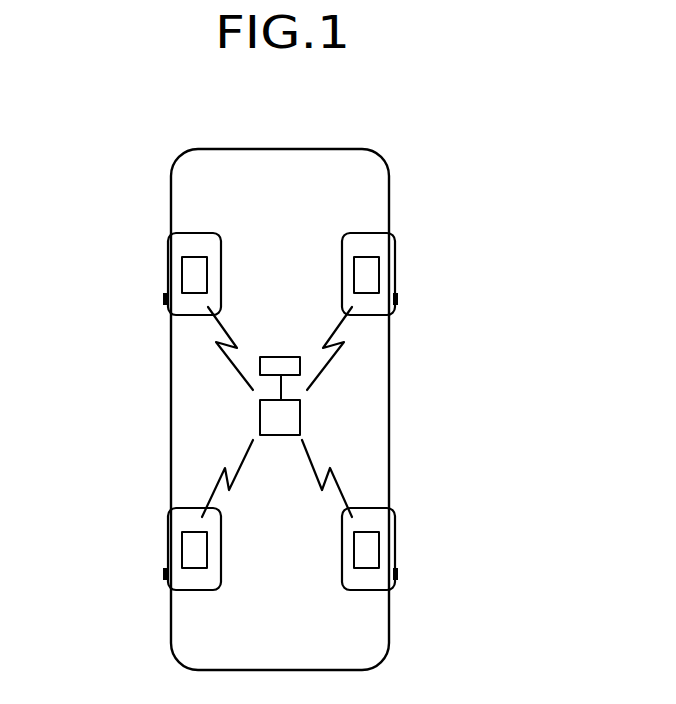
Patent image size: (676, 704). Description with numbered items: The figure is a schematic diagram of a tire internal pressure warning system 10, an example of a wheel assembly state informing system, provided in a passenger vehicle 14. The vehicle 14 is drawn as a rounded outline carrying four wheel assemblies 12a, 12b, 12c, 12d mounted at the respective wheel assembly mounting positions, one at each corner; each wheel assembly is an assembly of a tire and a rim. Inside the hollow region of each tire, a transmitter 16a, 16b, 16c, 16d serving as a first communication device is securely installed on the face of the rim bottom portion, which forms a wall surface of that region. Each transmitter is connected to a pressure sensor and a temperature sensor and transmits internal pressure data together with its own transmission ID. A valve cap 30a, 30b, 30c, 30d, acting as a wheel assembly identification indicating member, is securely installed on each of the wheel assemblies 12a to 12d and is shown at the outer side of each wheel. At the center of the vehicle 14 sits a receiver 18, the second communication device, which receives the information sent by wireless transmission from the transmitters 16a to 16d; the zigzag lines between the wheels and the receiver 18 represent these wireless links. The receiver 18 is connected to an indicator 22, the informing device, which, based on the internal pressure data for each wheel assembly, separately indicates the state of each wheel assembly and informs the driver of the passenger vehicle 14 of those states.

The tire internal pressure warning system 10 is at (490, 100).
The passenger vehicle 14 is at (343, 149).
The wheel assembly 12a is at (193, 232).
The wheel assembly 12b is at (369, 232).
The wheel assembly 12c is at (193, 507).
The wheel assembly 12d is at (369, 507).
The transmitter 16a is at (182, 273).
The transmitter 16b is at (379, 273).
The transmitter 16c is at (182, 548).
The transmitter 16d is at (379, 548).
The valve cap 30a is at (165, 298).
The valve cap 30b is at (397, 298).
The valve cap 30c is at (165, 573).
The valve cap 30d is at (397, 573).
The receiver 18 is at (300, 416).
The indicator 22 is at (280, 357).